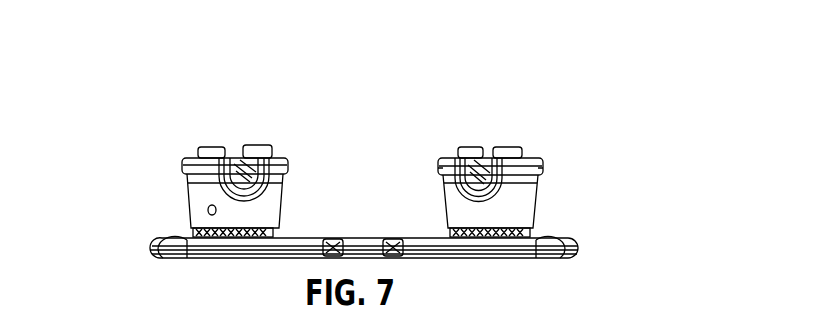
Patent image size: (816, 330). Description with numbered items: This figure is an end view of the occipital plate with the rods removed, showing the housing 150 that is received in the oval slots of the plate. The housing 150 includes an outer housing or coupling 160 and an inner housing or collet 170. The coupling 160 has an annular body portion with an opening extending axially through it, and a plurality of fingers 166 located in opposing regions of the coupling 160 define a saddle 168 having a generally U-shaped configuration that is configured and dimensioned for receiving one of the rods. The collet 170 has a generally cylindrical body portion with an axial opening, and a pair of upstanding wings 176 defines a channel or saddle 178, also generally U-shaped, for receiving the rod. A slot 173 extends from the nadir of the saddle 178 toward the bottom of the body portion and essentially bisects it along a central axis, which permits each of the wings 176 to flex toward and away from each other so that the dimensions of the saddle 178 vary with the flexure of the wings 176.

The housing 150 is at (173, 199).
The outer housing or coupling 160 is at (543, 208).
The fingers 166 is at (440, 170).
The saddle 168 is at (492, 190).
The inner housing or collet 170 is at (514, 146).
The slot 173 is at (250, 190).
The upstanding wings 176 is at (495, 143).
The channel or saddle 178 is at (232, 166).